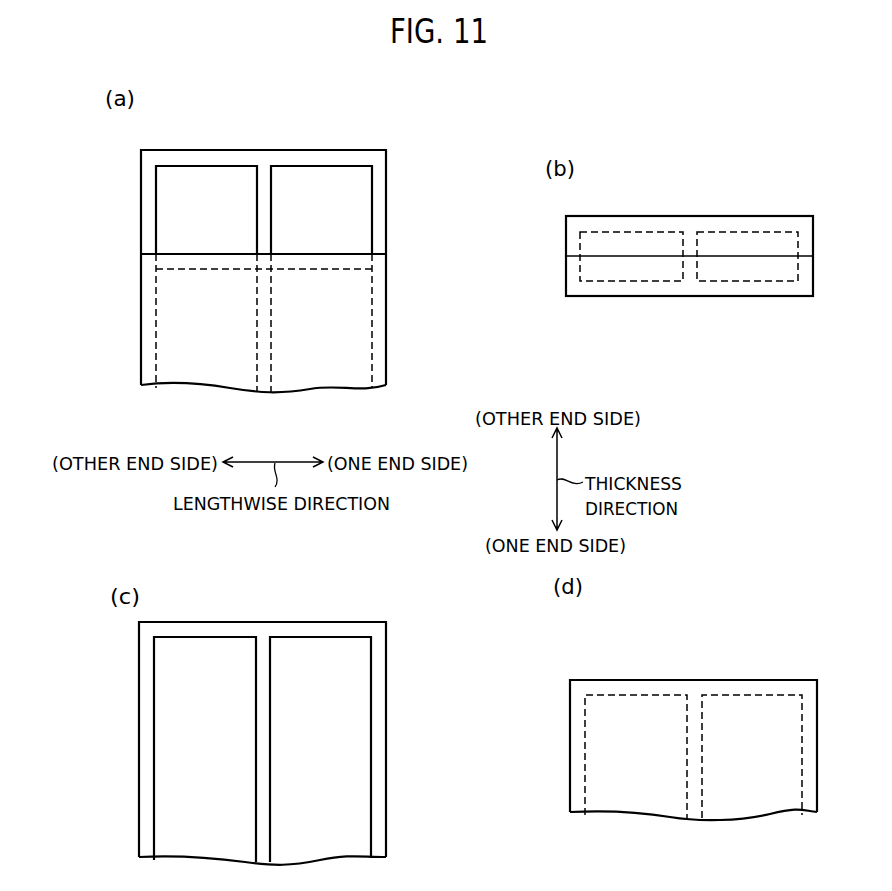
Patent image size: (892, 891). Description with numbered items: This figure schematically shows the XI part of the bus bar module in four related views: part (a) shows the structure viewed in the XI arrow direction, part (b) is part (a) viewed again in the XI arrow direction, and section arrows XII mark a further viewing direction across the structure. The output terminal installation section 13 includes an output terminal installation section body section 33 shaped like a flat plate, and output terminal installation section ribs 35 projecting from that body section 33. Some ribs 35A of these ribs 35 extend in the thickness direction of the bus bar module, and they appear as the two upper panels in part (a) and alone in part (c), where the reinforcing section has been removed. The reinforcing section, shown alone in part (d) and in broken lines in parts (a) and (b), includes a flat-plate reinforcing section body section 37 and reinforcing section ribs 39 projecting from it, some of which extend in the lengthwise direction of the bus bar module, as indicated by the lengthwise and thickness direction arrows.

The output terminal installation section 13 is at (365, 150).
The output terminal installation section body section 33 is at (197, 175).
The output terminal installation section ribs 35 is at (434, 478).
The ribs 35A is at (274, 510).
The reinforcing section ribs 39 is at (145, 335).
The reinforcing section body section 37 is at (358, 370).
The XI part / XI arrow direction XI is at (269, 130).
The element XII is at (125, 310).